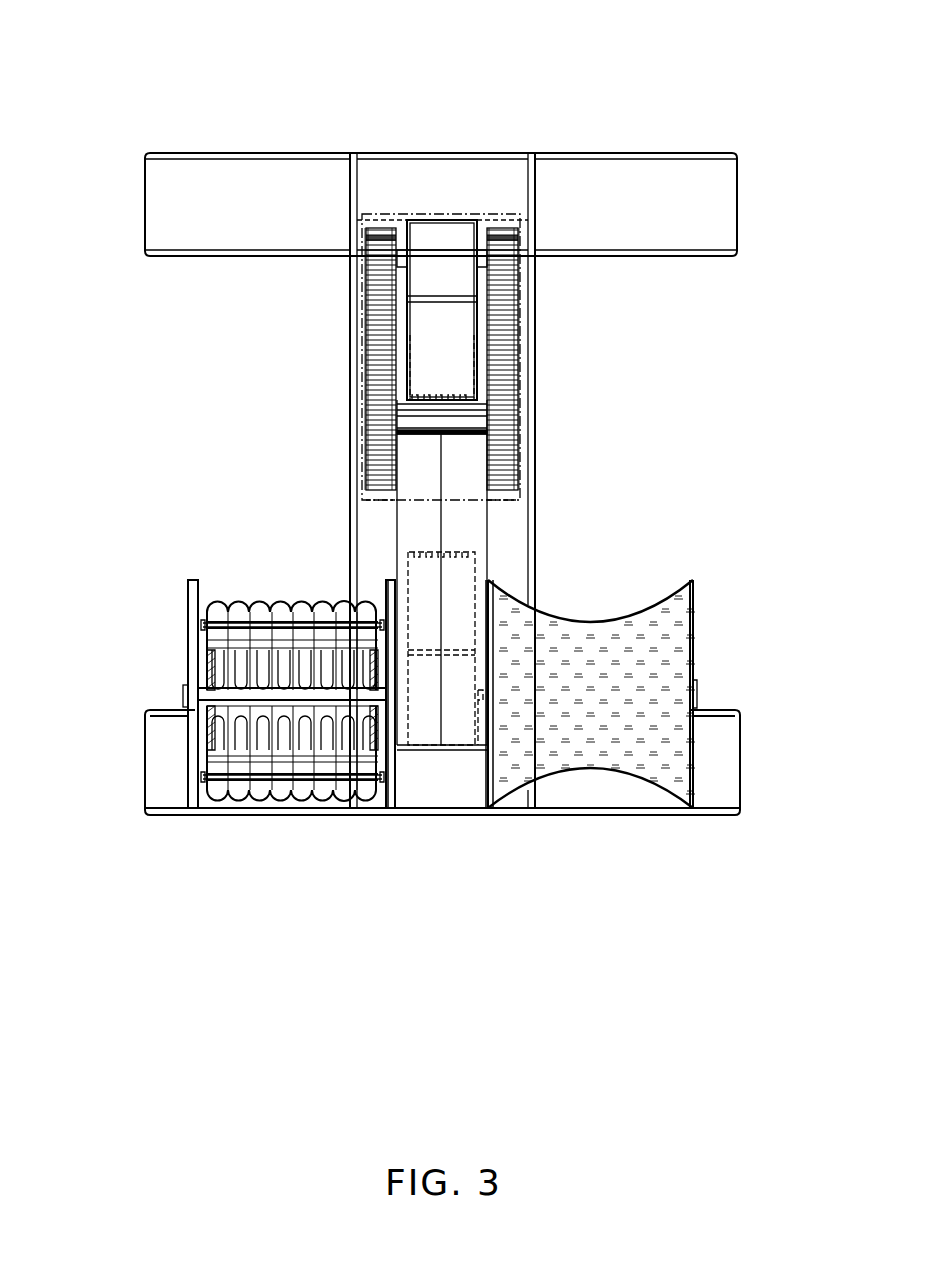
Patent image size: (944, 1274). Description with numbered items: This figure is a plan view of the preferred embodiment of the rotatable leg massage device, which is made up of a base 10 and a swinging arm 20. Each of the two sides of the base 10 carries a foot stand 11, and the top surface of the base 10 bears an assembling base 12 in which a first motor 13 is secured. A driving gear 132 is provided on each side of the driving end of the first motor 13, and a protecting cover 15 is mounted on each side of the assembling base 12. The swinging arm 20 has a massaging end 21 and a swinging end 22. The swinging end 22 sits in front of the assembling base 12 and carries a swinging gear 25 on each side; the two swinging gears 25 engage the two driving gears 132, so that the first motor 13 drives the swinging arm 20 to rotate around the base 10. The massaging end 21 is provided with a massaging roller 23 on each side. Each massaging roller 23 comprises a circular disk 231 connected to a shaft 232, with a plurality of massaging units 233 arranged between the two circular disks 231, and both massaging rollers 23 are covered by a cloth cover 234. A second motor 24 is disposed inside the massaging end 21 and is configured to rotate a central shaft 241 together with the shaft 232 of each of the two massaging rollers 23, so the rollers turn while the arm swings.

The base 10 is at (480, 134).
The foot stand 11 is at (656, 178).
The assembling base 12 is at (388, 412).
The first motor 13 is at (428, 317).
The driving gear 132 is at (378, 244).
The protecting cover 15 is at (521, 343).
The swinging arm 20 is at (384, 528).
The massaging end 21 is at (404, 742).
The swinging end 22 is at (422, 458).
The massaging roller 23 is at (448, 690).
The circular disk 231 is at (196, 578).
The shaft 232 is at (292, 667).
The massaging unit 233 is at (246, 597).
The cloth cover 234 is at (676, 668).
The second motor 24 is at (463, 568).
The central shaft 241 is at (478, 745).
The swinging gear 25 is at (372, 367).